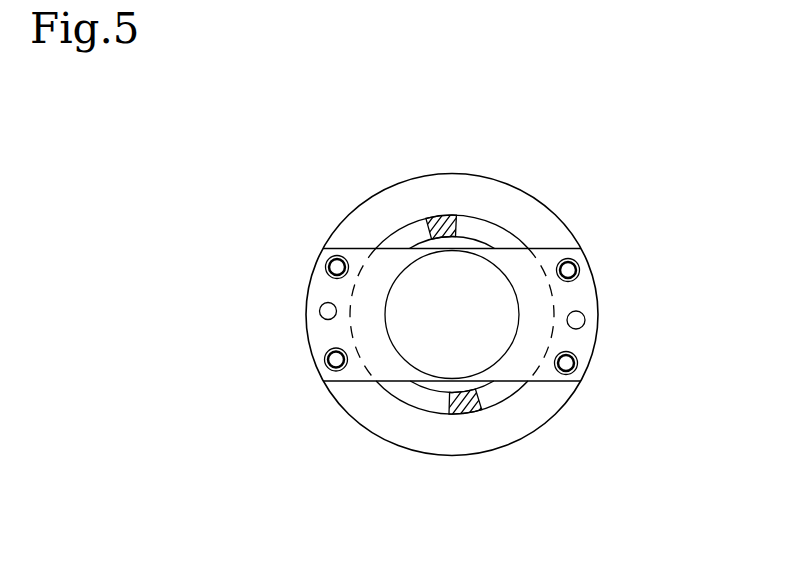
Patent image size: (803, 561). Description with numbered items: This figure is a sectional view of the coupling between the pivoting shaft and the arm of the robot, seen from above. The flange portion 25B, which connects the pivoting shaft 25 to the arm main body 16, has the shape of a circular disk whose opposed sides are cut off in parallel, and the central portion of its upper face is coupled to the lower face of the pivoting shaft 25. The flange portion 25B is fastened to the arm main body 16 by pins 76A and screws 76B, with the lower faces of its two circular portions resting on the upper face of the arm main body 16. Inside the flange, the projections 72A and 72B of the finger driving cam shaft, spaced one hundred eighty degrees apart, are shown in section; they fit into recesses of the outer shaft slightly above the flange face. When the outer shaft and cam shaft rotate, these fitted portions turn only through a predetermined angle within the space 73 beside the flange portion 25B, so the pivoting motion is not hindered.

The arm main body 16 is at (536, 196).
The pivoting shaft 25 is at (410, 250).
The flange portion 25B is at (598, 300).
The projection 72A is at (433, 217).
The projection 72B is at (463, 417).
The space 73 is at (422, 395).
The pins 76A is at (326, 265).
The screws 76B is at (320, 312).